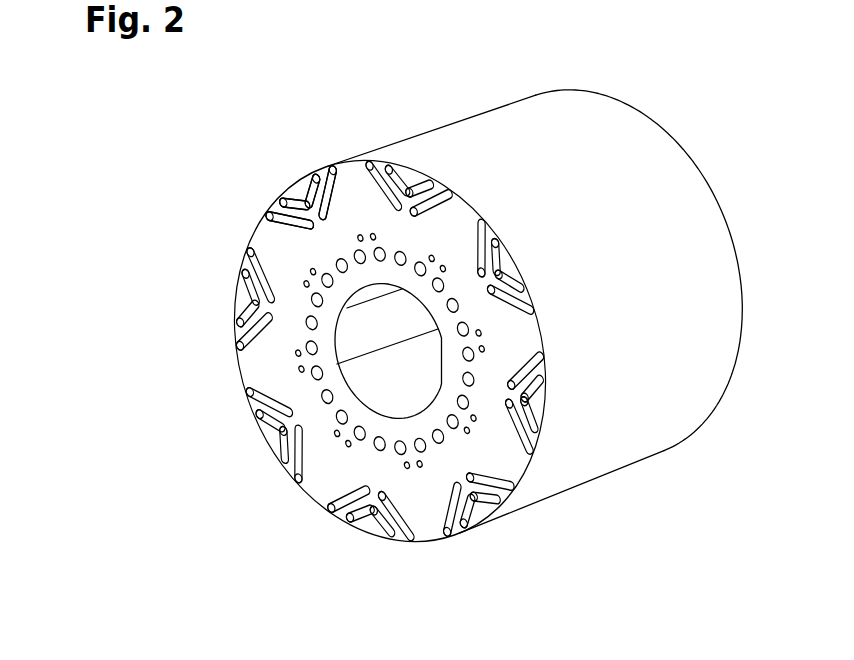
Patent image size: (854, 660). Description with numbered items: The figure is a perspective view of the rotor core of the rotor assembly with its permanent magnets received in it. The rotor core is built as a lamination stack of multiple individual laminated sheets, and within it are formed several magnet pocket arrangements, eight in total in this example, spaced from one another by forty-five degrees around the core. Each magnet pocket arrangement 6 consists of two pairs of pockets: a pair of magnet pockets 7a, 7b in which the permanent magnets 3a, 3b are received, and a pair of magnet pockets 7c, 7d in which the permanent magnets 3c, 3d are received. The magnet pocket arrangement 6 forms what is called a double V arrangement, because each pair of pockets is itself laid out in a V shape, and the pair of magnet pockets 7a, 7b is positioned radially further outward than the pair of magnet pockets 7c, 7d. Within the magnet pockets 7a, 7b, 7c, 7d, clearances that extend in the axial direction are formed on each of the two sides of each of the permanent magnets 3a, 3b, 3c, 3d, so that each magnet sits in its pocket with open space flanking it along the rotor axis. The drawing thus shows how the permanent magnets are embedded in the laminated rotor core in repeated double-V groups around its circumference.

The permanent magnet 3a is at (294, 200).
The permanent magnet 3b is at (310, 183).
The permanent magnet 3c is at (270, 212).
The permanent magnet 3d is at (335, 172).
The magnet pocket 7a is at (283, 204).
The magnet pocket 7b is at (317, 185).
The magnet pocket 7c is at (269, 220).
The magnet pocket 7d is at (338, 168).
The magnet pocket arrangement 6 is at (327, 238).